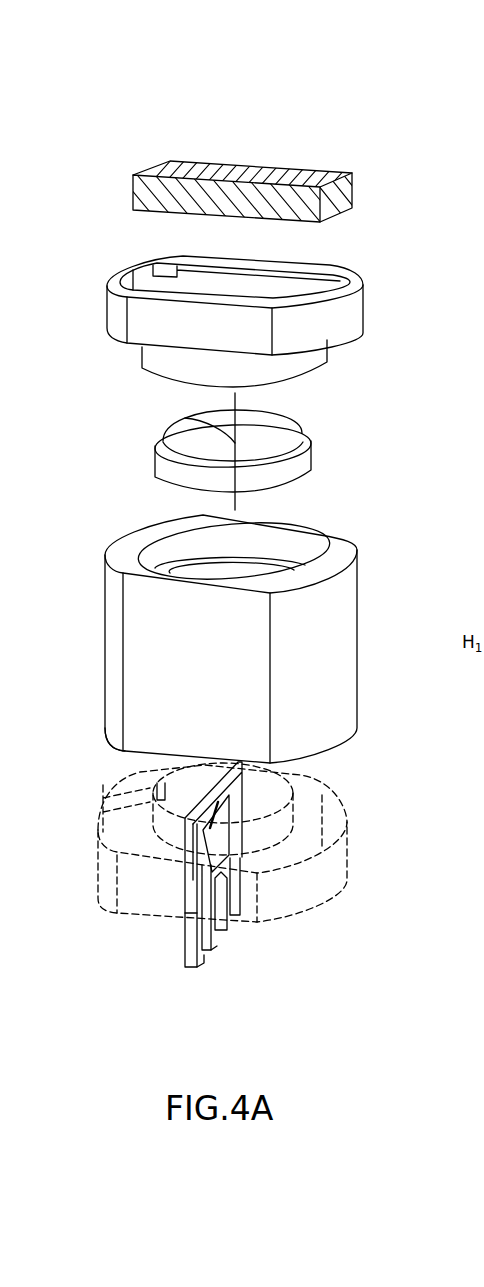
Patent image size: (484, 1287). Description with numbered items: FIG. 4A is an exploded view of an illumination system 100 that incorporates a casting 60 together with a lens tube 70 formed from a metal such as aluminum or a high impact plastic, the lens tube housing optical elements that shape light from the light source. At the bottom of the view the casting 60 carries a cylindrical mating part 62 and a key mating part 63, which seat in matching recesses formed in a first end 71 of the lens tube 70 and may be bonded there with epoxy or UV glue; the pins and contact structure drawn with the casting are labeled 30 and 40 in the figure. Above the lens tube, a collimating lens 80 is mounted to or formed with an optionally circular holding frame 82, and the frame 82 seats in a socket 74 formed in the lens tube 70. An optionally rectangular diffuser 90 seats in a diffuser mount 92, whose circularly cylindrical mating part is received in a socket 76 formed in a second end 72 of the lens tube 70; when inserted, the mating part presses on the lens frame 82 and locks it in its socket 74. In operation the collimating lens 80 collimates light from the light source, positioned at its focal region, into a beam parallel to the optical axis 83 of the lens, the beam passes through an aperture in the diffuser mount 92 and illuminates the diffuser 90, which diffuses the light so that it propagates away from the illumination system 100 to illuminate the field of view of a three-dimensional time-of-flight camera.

The illumination system 100 is at (183, 87).
The diffuser 90 is at (347, 192).
The diffuser mount 92 is at (370, 297).
The collimating lens 80 is at (277, 435).
The holding frame 82 is at (302, 463).
The optical axis 83 is at (178, 421).
The lens tube 70 is at (240, 608).
The first end 71 is at (130, 750).
The second end 72 is at (140, 532).
The socket 74 is at (257, 570).
The socket 76 is at (312, 548).
The casting 60 is at (238, 829).
The cylindrical mating part 62 is at (298, 800).
The key mating part 63 is at (107, 777).
The contact assembly 30 is at (209, 885).
The contact pins 40 is at (187, 945).